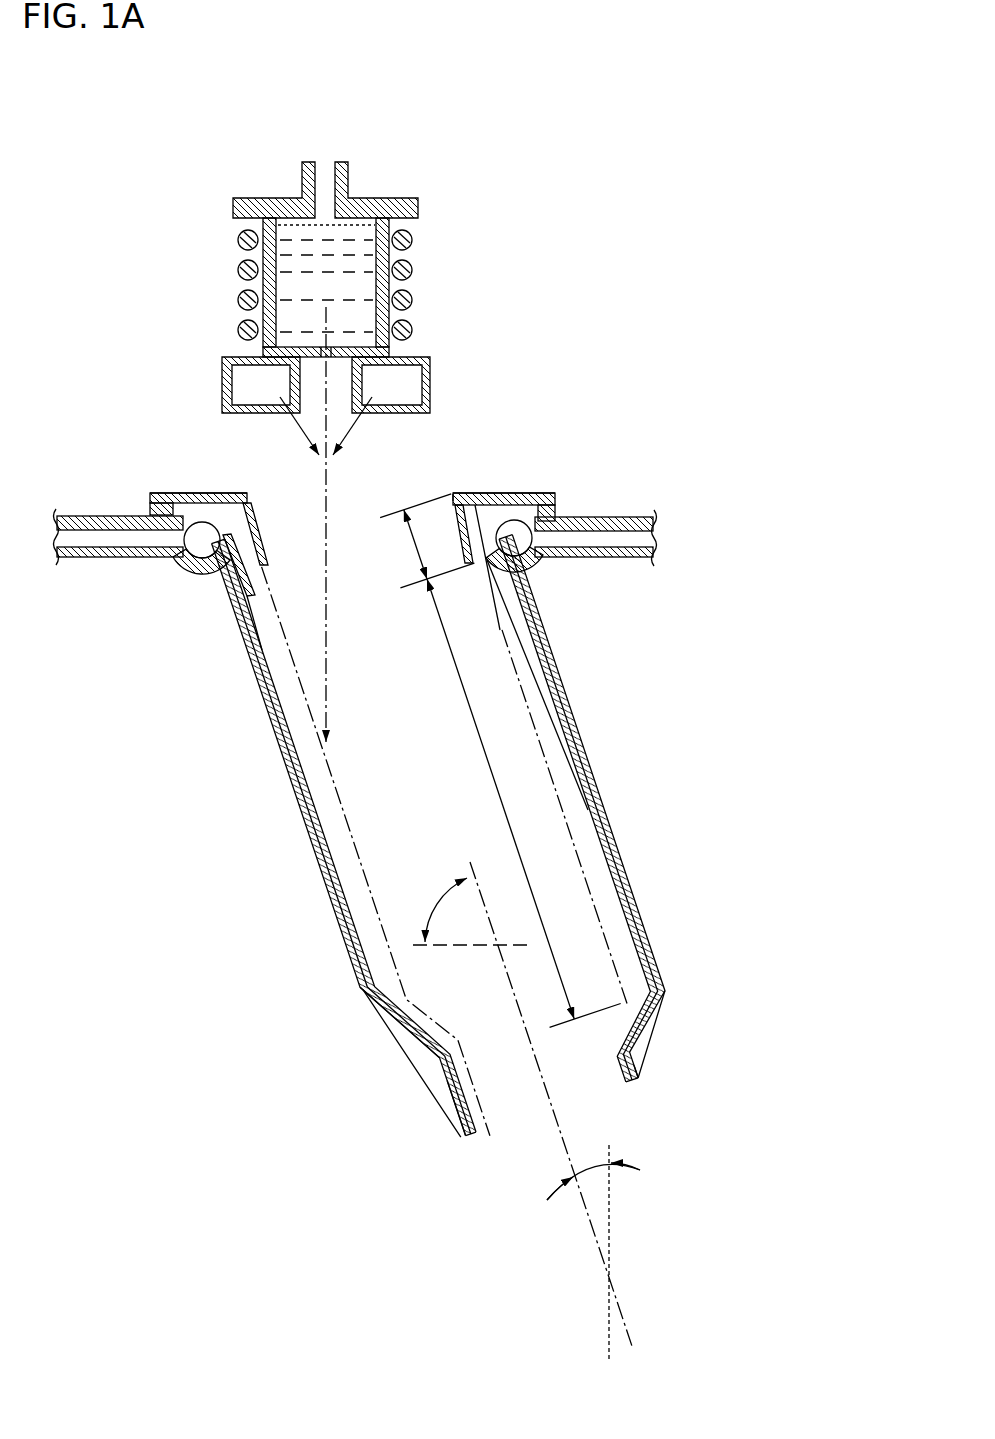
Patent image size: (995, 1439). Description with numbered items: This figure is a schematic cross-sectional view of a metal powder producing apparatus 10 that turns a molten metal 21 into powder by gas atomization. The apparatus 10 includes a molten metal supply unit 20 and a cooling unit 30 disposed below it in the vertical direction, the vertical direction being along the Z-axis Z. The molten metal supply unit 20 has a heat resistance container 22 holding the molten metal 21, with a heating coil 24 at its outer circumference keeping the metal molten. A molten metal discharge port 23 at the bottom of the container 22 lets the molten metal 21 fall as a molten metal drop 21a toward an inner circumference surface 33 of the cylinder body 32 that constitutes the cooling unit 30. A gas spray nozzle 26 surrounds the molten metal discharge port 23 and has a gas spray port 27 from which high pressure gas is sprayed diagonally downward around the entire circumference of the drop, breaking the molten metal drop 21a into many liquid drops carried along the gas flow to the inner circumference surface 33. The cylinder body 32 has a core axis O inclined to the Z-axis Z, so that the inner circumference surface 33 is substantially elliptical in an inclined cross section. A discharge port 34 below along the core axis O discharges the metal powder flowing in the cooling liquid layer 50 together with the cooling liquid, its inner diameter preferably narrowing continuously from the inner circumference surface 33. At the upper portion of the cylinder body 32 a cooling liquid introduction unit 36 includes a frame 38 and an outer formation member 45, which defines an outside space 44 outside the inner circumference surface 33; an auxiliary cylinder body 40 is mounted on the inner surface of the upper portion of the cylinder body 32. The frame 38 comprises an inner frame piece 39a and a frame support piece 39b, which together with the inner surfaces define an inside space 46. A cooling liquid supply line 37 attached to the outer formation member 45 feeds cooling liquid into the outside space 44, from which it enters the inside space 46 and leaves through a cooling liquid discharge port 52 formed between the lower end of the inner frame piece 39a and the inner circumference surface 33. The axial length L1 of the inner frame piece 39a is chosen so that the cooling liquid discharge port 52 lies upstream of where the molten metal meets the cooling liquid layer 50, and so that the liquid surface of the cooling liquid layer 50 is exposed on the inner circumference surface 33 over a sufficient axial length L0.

The metal powder producing apparatus 10 is at (645, 232).
The molten metal supply unit 20 is at (130, 298).
The molten metal 21 is at (360, 260).
The molten metal drop 21a is at (327, 660).
The heat resistance container 22 is at (392, 256).
The molten metal discharge port 23 is at (325, 347).
The heating coil 24 is at (413, 268).
The gas spray nozzle 26 is at (433, 376).
The gas spray port 27 is at (292, 414).
The cooling unit 30 is at (263, 893).
The cylinder body 32 is at (642, 934).
The inner circumference surface 33 is at (607, 826).
The discharge port 34 is at (470, 1137).
The cooling liquid introduction unit 36 is at (160, 482).
The cooling liquid supply line 37 is at (94, 514).
The frame 38 is at (252, 490).
The inner frame piece 39a is at (265, 555).
The frame support piece 39b is at (228, 494).
The auxiliary cylinder body 40 is at (230, 578).
The outside space 44 is at (186, 572).
The outer formation member 45 is at (218, 582).
The inside space 46 is at (452, 494).
The cooling liquid layer 50 is at (397, 950).
The cooling liquid discharge port 52 is at (251, 568).
The axial length L0 is at (510, 795).
The axial length L1 is at (427, 540).
The core axis O is at (565, 1153).
The Z-axis Z is at (610, 1152).